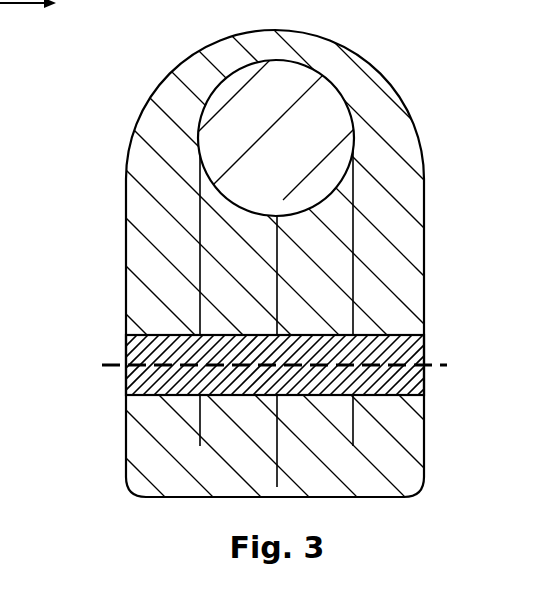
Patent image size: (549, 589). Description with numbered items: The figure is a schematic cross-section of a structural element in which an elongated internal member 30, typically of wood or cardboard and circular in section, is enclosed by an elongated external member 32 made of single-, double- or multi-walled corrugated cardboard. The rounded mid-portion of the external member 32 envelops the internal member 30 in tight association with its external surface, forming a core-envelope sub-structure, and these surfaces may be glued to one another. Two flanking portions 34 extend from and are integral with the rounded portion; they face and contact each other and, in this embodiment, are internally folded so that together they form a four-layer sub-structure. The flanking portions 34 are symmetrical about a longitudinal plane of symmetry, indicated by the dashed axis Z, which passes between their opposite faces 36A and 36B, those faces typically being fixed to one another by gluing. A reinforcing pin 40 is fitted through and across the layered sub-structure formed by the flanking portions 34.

The internal member 30 is at (290, 92).
The external member 32 is at (425, 228).
The flanking portions 34 is at (153, 245).
The opposite face 36A is at (270, 471).
The opposite face 36B is at (279, 418).
The reinforcing pin 40 is at (135, 387).
The axis Z is at (437, 366).